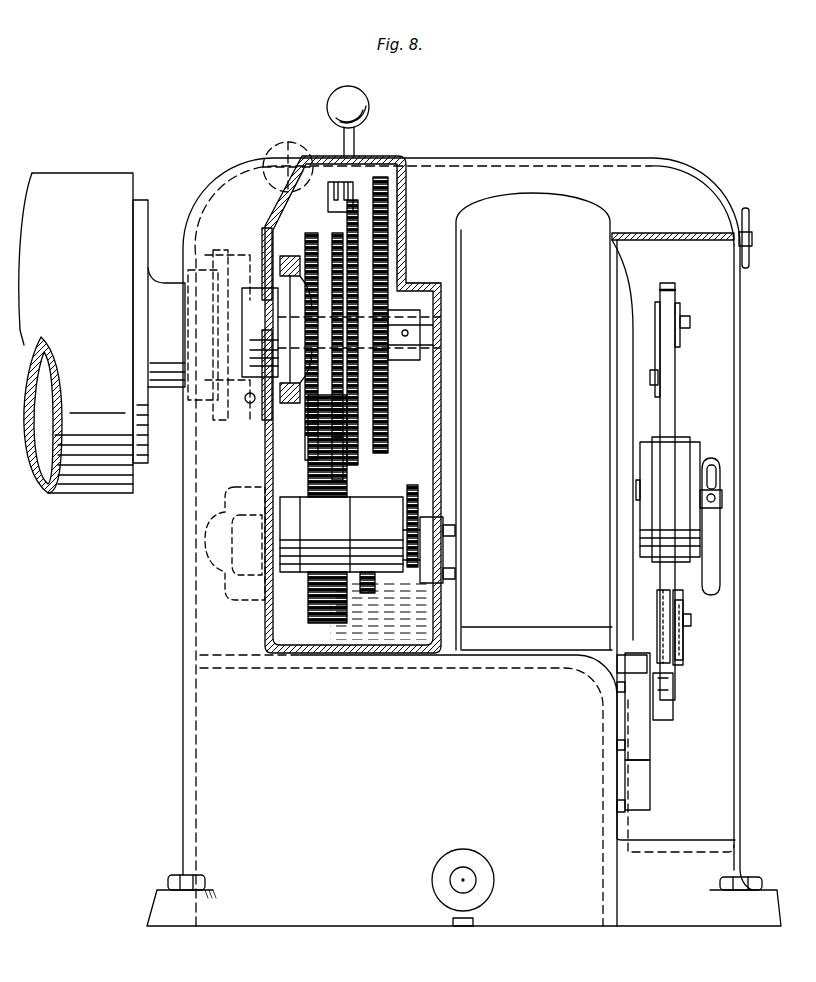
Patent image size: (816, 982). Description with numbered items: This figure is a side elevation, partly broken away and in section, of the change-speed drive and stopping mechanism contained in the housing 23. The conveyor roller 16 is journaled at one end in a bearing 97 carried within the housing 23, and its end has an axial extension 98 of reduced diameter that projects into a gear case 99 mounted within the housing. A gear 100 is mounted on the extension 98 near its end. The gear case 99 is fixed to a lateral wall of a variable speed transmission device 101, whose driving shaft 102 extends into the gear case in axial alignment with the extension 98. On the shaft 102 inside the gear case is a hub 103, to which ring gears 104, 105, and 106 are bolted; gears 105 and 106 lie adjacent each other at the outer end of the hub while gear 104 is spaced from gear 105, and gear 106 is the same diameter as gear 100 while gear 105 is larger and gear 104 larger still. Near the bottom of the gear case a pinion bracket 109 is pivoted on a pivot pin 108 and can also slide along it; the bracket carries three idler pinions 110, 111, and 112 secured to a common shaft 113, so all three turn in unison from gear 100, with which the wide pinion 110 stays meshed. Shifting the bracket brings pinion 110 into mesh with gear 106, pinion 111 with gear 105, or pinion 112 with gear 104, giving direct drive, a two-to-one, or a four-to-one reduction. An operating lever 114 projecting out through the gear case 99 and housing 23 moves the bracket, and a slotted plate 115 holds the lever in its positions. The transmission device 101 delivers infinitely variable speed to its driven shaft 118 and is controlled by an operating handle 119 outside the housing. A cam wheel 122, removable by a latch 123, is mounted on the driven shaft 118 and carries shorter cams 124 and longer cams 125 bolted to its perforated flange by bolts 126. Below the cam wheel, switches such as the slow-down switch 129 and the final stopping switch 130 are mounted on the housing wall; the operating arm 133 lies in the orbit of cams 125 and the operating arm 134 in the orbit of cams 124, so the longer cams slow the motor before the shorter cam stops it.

The conveyor roller 16 is at (80, 182).
The housing 23 is at (183, 626).
The bearing 97 is at (242, 400).
The axial extension 98 is at (270, 258).
The gear case 99 is at (406, 198).
The gear 100 is at (282, 165).
The variable speed transmission device 101 is at (576, 215).
The shaft 102 is at (424, 312).
The hub 103 is at (404, 240).
The ring gear 104 is at (398, 164).
The ring gear 105 is at (364, 205).
The ring gear 106 is at (308, 190).
The pivot pin 108 is at (262, 610).
The pinion bracket 109 is at (436, 452).
The idler pinion 110 is at (330, 610).
The idler pinion 111 is at (370, 595).
The idler pinion 112 is at (420, 505).
The common shaft 113 is at (300, 497).
The operating lever 114 is at (367, 108).
The slotted plate 115 is at (332, 206).
The driven shaft 118 is at (638, 483).
The operating handle 119 is at (752, 215).
The cam wheel 122 is at (672, 400).
The latch 123 is at (720, 578).
The cam 124 is at (680, 312).
The cam 125 is at (656, 302).
The bolt 126 is at (688, 325).
The electrical switch 129 is at (650, 790).
The electrical switch 130 is at (650, 742).
The operating arm 133 is at (673, 712).
The operating arm 134 is at (683, 640).